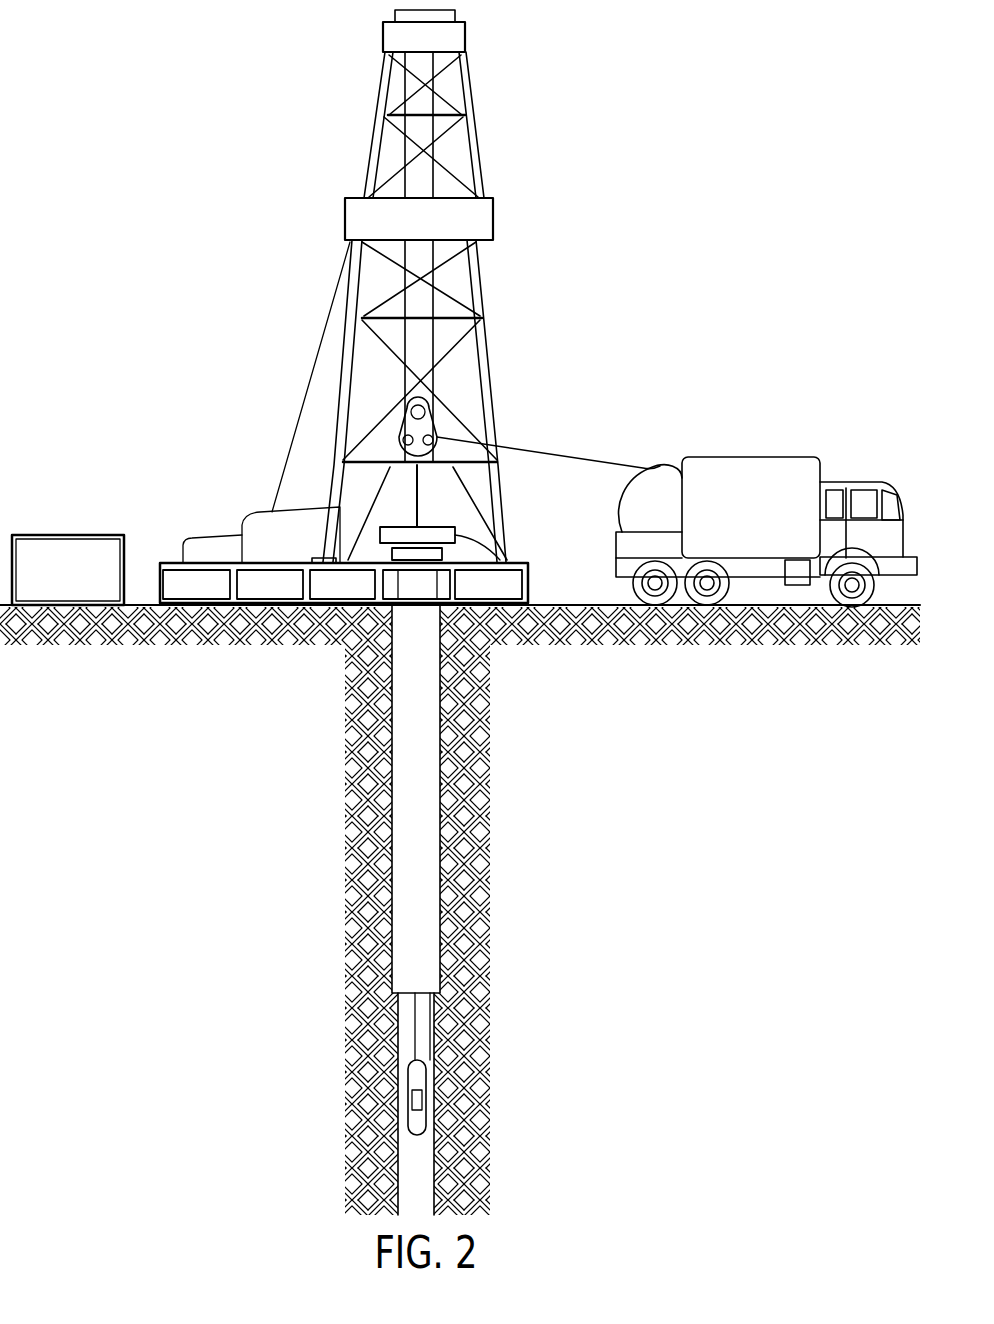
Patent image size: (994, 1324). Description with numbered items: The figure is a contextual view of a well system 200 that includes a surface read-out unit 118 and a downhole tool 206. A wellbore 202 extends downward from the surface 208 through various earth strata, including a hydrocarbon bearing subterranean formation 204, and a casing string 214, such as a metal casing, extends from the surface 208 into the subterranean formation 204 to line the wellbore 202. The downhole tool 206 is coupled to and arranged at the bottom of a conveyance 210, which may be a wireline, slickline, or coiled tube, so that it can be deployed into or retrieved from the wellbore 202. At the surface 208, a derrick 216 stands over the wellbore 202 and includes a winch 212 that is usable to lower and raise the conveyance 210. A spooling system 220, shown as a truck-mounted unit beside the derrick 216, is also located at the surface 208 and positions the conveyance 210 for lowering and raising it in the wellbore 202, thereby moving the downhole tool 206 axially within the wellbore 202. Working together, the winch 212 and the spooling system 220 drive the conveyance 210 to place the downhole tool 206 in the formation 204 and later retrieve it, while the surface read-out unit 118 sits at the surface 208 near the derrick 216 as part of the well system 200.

The well system 200 is at (634, 255).
The surface read-out unit 118 is at (68, 570).
The wellbore 202 is at (442, 882).
The subterranean formation 204 is at (484, 757).
The downhole tool 206 is at (425, 1062).
The surface 208 is at (128, 604).
The conveyance 210 is at (545, 448).
The winch 212 is at (437, 403).
The casing string 214 is at (400, 905).
The derrick 216 is at (530, 566).
The spooling system 220 is at (660, 458).